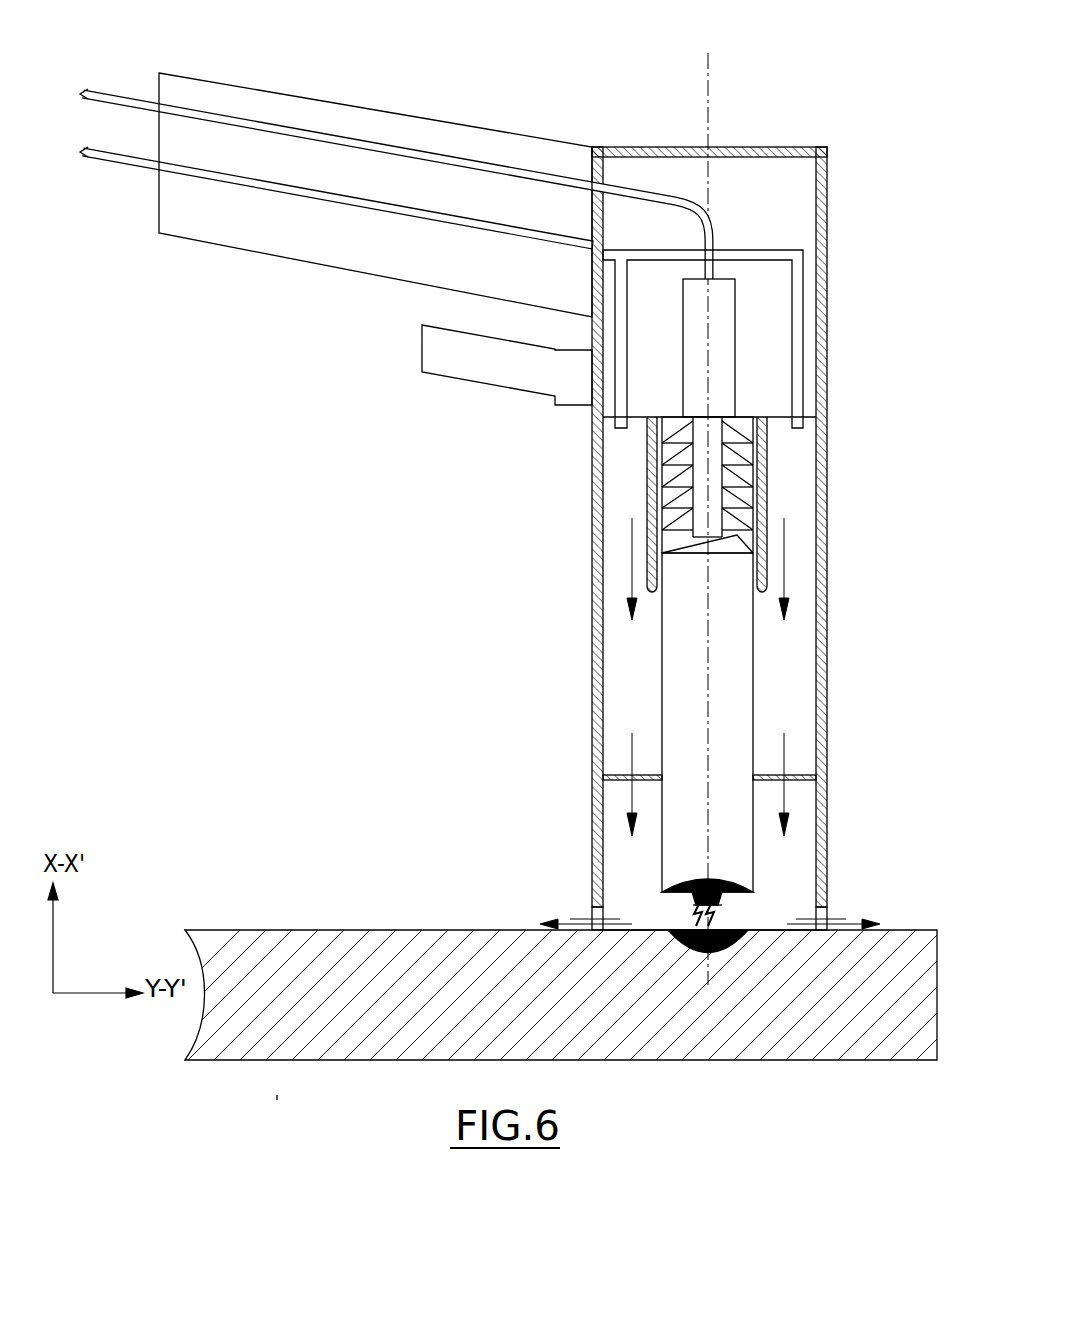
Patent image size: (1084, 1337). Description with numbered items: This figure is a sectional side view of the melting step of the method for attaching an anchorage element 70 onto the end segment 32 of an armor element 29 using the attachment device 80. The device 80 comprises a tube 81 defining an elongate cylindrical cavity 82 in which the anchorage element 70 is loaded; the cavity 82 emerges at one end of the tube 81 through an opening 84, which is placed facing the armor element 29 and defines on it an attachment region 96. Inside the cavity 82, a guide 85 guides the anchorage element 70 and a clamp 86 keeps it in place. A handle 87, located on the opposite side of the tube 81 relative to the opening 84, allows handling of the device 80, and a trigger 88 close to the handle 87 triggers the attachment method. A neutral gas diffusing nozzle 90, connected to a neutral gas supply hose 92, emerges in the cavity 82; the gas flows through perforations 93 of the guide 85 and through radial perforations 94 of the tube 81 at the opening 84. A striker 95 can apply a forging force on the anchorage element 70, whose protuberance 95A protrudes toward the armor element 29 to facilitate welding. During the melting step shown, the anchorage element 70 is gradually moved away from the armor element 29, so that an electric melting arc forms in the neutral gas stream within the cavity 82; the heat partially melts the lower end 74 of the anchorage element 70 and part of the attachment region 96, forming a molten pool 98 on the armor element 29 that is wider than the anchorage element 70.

The armor element 29 is at (277, 1100).
The end segment 32 is at (737, 1062).
The anchorage element 70 is at (740, 660).
The lower end 74 is at (757, 928).
The attachment device 80 is at (718, 140).
The tube 81 is at (826, 530).
The cavity 82 is at (800, 463).
The opening 84 is at (636, 900).
The guide 85 is at (822, 800).
The clamp 86 is at (770, 485).
The handle 87 is at (477, 140).
The trigger 88 is at (474, 370).
The neutral gas diffusing nozzle 90 is at (596, 424).
The neutral gas supply hose 92 is at (118, 160).
The perforations 93 is at (800, 778).
The radial perforations 94 is at (752, 924).
The striker 95 is at (700, 507).
The protuberance 95A is at (708, 886).
The attachment region 96 is at (756, 940).
The molten pool 98 is at (722, 950).